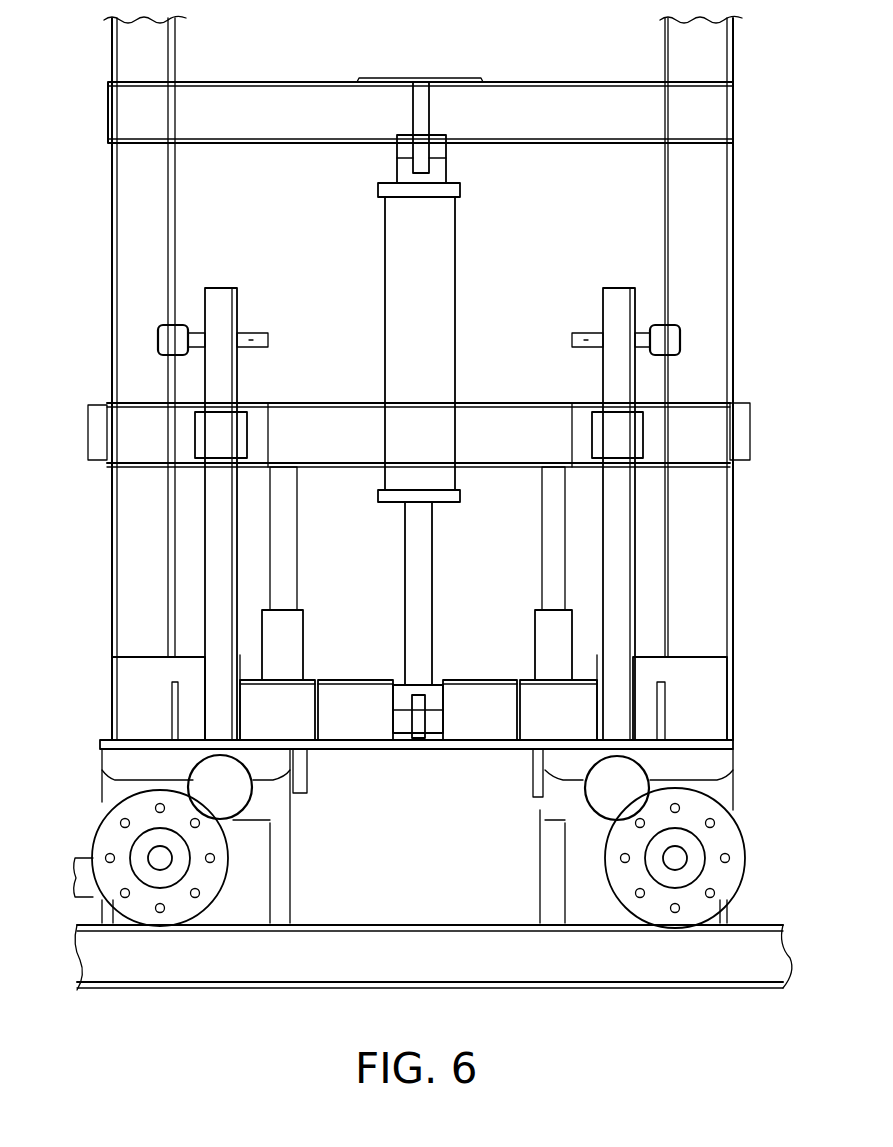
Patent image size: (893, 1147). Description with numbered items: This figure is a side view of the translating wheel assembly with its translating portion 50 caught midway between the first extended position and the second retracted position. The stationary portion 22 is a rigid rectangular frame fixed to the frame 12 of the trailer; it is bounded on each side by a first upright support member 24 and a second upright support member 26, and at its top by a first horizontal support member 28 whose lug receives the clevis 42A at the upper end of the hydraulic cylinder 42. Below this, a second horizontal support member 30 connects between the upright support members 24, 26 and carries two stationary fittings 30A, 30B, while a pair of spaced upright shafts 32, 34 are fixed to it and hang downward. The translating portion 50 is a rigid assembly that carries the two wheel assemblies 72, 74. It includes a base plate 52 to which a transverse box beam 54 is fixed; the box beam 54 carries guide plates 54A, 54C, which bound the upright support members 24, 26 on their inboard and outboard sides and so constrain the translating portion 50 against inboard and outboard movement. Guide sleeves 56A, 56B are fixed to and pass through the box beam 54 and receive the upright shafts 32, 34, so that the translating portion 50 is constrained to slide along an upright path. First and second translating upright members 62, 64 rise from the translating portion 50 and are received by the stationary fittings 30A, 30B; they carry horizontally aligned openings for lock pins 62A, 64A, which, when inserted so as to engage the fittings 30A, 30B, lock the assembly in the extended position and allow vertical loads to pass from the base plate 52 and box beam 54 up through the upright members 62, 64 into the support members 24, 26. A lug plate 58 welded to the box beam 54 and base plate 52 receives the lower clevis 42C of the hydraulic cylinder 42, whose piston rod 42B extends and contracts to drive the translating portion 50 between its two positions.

The frame 12 is at (440, 976).
The stationary portion 22 is at (740, 188).
The first upright support member 24 is at (158, 278).
The second upright support member 26 is at (712, 280).
The first horizontal support member 28 is at (566, 131).
The second horizontal support member 30 is at (507, 451).
The stationary fitting 30A is at (244, 432).
The stationary fitting 30B is at (596, 435).
The upright shaft 32 is at (297, 568).
The upright shaft 34 is at (543, 553).
The hydraulic cylinder 42 is at (432, 345).
The clevis 42A is at (447, 158).
The cylinder piston rod 42B is at (425, 557).
The clevis 42C is at (443, 700).
The translating portion 50 is at (737, 725).
The base plate 52 is at (340, 755).
The transverse box beam 54 is at (490, 721).
The guide plate 54A is at (155, 711).
The guide plate 54C is at (718, 710).
The guide sleeve 56A is at (303, 650).
The guide sleeve 56B is at (538, 649).
The lug plate 58 is at (418, 708).
The first translating upright member 62 is at (207, 543).
The lock pin 62A is at (268, 338).
The second translating upright member 64 is at (633, 520).
The lock pin 64A is at (572, 340).
The wheel assembly 72 is at (92, 830).
The wheel assembly 74 is at (752, 830).